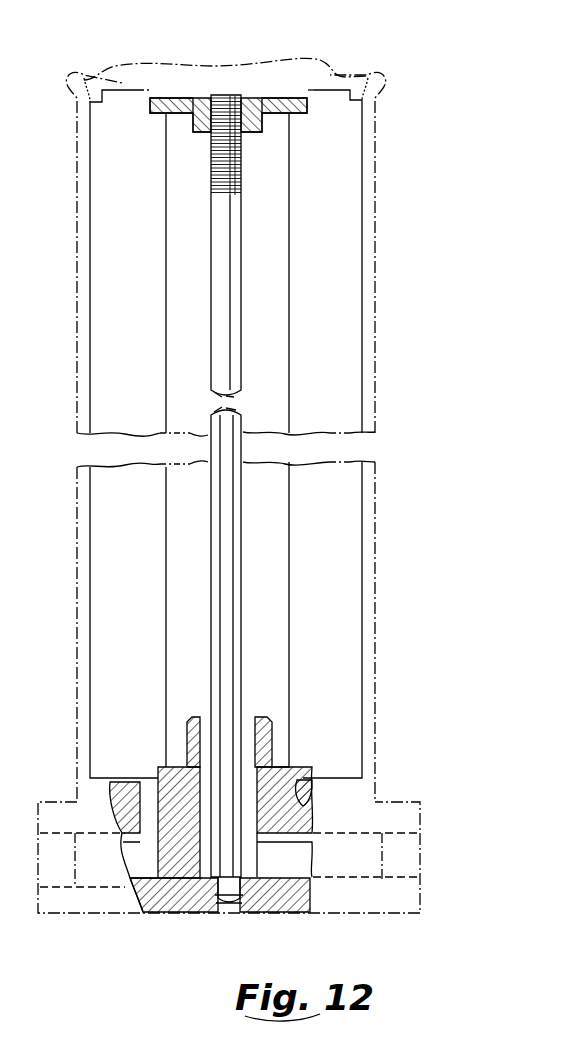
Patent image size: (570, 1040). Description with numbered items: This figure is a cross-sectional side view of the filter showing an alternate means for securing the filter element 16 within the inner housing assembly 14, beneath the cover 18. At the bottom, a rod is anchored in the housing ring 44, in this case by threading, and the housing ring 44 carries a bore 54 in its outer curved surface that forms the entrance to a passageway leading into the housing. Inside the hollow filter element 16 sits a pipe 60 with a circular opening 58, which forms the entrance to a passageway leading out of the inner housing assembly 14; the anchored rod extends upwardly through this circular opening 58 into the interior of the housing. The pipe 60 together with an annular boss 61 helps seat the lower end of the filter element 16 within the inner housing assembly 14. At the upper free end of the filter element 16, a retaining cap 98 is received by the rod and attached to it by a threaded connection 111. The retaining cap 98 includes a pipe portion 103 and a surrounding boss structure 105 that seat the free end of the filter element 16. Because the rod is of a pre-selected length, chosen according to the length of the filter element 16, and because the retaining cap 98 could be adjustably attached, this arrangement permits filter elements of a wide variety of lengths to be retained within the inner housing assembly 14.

The inner housing assembly 14 is at (378, 368).
The filter element 16 is at (291, 522).
The cover 18 is at (112, 78).
The housing ring 44 is at (188, 900).
The bore 54 is at (293, 842).
The circular opening 58 is at (198, 715).
The pipe 60 is at (268, 732).
The annular boss 61 is at (163, 765).
The retaining cap 98 is at (176, 100).
The pipe portion 103 is at (244, 134).
The boss structure 105 is at (160, 116).
The threaded connection 111 is at (242, 100).